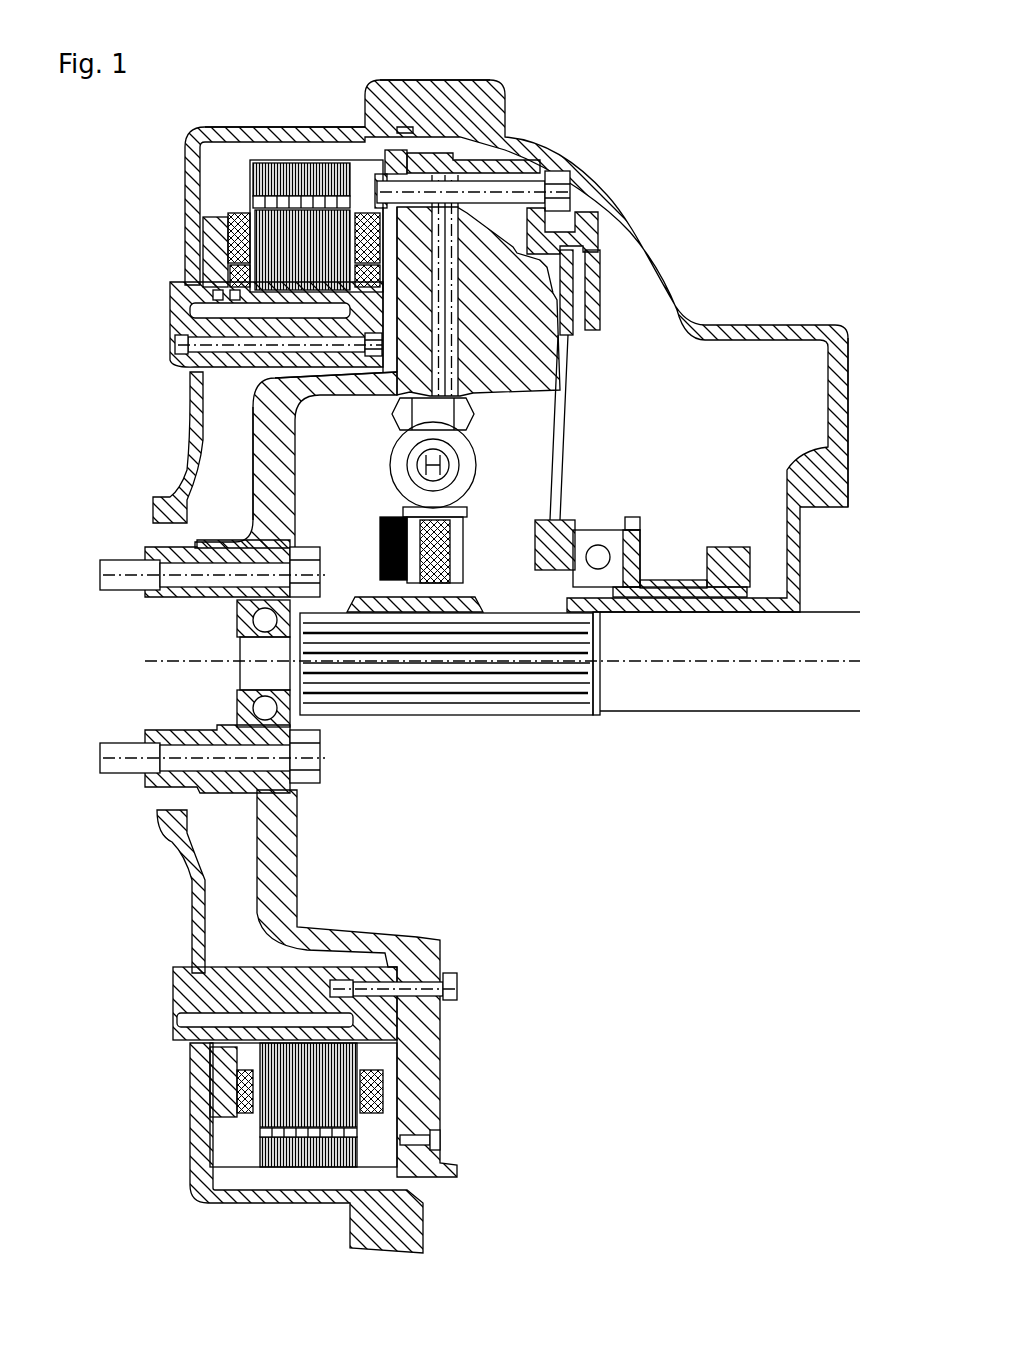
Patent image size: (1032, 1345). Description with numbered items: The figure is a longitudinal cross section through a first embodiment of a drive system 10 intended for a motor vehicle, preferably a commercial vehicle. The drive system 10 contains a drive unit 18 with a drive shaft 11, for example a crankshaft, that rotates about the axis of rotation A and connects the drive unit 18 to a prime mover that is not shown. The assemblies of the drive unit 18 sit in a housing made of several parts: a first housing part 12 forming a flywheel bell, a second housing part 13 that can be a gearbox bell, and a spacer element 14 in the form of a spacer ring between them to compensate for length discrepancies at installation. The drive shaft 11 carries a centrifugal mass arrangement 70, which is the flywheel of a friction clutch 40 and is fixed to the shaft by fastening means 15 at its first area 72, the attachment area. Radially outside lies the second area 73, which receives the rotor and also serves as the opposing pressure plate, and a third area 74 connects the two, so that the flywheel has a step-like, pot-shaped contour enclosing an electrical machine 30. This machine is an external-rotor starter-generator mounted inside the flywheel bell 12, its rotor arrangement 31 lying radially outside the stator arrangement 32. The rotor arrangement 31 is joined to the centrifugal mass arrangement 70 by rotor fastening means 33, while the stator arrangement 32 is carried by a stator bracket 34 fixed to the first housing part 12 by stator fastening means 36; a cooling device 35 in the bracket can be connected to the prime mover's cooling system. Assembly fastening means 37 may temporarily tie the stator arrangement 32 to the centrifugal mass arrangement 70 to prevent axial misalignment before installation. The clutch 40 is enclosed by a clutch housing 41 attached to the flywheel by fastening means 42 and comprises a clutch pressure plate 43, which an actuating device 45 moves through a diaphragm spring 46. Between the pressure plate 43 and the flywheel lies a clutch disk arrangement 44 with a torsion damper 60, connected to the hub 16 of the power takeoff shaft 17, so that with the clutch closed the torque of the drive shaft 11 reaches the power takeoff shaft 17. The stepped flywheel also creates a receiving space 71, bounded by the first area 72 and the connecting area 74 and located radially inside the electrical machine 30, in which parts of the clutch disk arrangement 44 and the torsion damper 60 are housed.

The drive system 10 is at (125, 150).
The drive shaft 11 is at (203, 637).
The first housing part 12 is at (291, 135).
The second housing part 13 is at (627, 233).
The spacer element 14 is at (448, 82).
The fastening means 15 is at (200, 568).
The hub 16 is at (450, 717).
The power takeoff shaft 17 is at (697, 712).
The drive unit 18 is at (258, 118).
The electrical machine 30 is at (243, 185).
The rotor arrangement 31 is at (322, 163).
The stator arrangement 32 is at (287, 233).
The rotor fastening means 33 is at (403, 160).
The stator bracket 34 is at (227, 277).
The cooling device 35 is at (253, 315).
The stator fastening means 36 is at (172, 363).
The assembly fastening means 37 is at (420, 980).
The clutch 40 is at (593, 362).
The clutch housing 41 is at (582, 238).
The fastening means 42 is at (523, 187).
The clutch pressure plate 43 is at (507, 340).
The clutch disk arrangement 44 is at (472, 406).
The actuating device 45 is at (647, 523).
The diaphragm spring 46 is at (562, 450).
The torsion damper 60 is at (402, 458).
The centrifugal mass arrangement 70 is at (253, 418).
The receiving space 71 is at (245, 495).
The first area 72 is at (258, 470).
The second area 73 is at (603, 257).
The third area 74 is at (258, 405).
The axis of rotation A is at (850, 660).